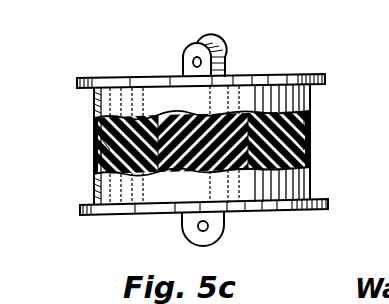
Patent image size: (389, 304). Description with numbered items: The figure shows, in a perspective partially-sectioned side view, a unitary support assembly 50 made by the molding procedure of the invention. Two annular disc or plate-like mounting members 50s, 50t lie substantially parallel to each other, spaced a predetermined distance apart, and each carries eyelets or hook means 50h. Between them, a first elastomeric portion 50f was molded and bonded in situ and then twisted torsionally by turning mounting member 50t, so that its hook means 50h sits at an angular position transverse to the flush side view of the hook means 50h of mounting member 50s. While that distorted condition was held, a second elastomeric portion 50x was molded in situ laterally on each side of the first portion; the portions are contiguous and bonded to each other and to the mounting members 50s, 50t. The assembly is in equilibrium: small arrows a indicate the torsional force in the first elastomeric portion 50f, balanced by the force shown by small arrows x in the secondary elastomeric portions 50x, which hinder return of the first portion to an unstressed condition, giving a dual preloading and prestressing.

The unitary support assembly 50 is at (95, 103).
The mounting member 50t is at (297, 75).
The mounting member 50s is at (312, 209).
The hook means 50h is at (206, 43).
The first elastomeric portion 50f is at (183, 171).
The second elastomeric portion 50x is at (95, 159).
The small arrows x is at (96, 147).
The small arrows a is at (184, 116).